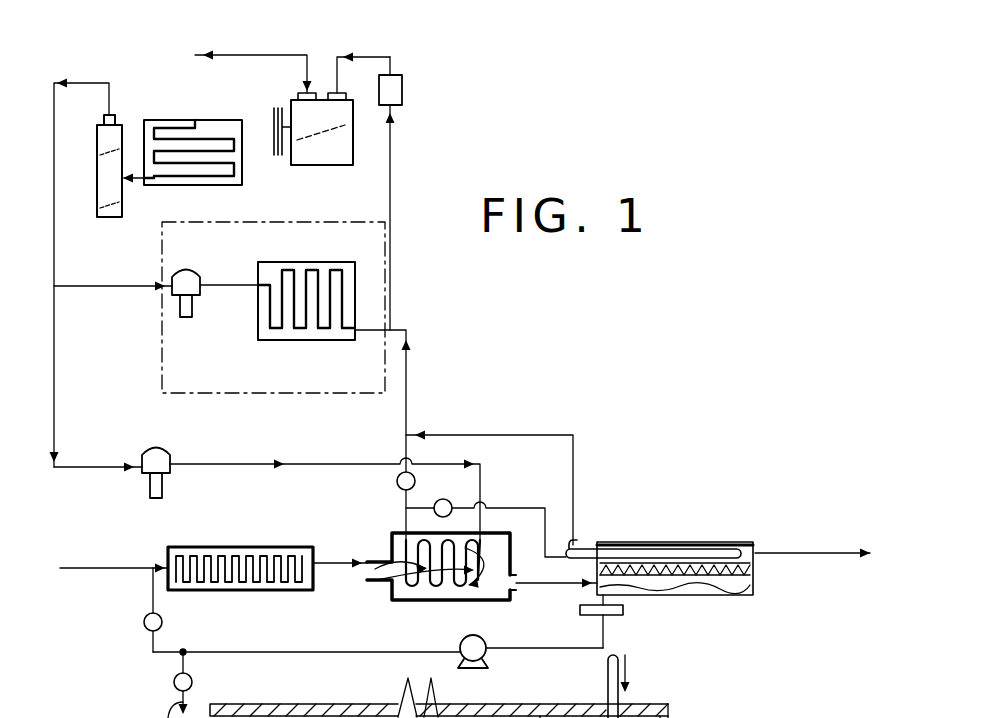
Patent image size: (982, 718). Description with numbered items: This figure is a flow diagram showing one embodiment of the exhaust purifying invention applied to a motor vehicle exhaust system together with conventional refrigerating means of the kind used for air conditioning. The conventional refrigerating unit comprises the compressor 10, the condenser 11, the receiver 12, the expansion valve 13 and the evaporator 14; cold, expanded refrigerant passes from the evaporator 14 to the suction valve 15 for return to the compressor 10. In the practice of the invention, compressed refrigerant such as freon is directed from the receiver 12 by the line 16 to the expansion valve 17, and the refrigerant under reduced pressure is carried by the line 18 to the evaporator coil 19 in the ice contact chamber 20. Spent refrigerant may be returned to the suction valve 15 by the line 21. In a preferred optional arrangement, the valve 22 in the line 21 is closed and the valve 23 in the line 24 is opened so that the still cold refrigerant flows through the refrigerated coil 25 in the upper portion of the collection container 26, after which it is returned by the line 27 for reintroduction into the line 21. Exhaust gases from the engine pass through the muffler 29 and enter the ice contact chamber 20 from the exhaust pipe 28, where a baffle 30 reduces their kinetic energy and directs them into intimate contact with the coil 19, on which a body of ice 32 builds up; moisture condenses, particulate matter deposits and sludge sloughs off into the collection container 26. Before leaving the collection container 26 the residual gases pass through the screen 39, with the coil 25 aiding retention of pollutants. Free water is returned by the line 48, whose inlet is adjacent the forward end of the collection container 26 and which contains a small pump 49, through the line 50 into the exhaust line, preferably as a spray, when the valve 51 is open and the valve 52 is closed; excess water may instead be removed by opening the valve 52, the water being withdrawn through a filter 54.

The compressor 10 is at (353, 148).
The condenser 11 is at (222, 126).
The receiver 12 is at (100, 166).
The expansion valve 13 is at (190, 282).
The evaporator 14 is at (320, 272).
The suction valve 15 is at (396, 78).
The line 16 is at (56, 378).
The expansion valve 17 is at (165, 458).
The line 18 is at (310, 464).
The evaporator coil 19 is at (490, 548).
The ice contact chamber 20 is at (384, 595).
The line 21 is at (407, 362).
The valve 22 is at (397, 482).
The valve 23 is at (462, 490).
The line 24 is at (500, 508).
The refrigerated coil 25 is at (665, 549).
The collection container 26 is at (718, 535).
The line 27 is at (558, 416).
The exhaust pipe 28 is at (108, 568).
The muffler 29 is at (250, 548).
The baffle 30 is at (439, 697).
The body of ice 32 is at (244, 712).
The screen 39 is at (625, 565).
The return line 48 is at (392, 654).
The pump 49 is at (487, 640).
The line 50 is at (153, 652).
The valve 51 is at (145, 630).
The valve 52 is at (175, 688).
The filter 54 is at (580, 610).